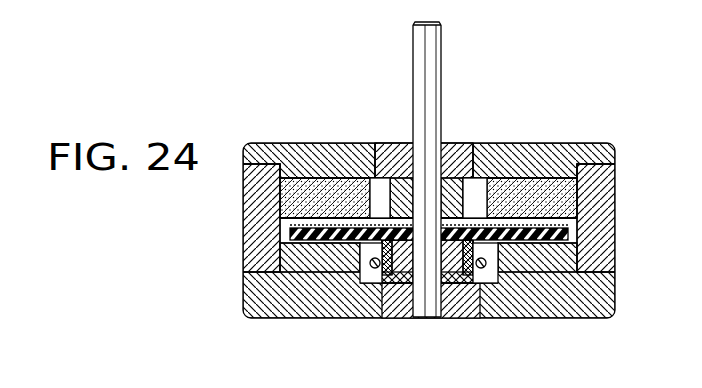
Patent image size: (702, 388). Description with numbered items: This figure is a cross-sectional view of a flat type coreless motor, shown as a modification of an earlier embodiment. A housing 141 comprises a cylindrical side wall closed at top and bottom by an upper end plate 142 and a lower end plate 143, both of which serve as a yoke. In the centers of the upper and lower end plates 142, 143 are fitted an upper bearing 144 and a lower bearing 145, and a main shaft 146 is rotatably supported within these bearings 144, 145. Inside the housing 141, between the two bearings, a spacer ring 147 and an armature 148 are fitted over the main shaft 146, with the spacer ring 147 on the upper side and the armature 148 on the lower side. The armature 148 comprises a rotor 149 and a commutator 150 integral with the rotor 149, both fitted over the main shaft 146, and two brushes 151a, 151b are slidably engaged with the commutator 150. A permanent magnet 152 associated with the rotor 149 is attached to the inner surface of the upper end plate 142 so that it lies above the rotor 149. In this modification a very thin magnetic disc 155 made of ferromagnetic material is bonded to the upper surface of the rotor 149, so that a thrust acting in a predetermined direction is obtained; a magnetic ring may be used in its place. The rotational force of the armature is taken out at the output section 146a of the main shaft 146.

The housing 141 is at (609, 203).
The upper end plate 142 is at (552, 152).
The lower end plate 143 is at (608, 312).
The upper bearing 144 is at (461, 150).
The lower bearing 145 is at (399, 317).
The main shaft 146 is at (426, 318).
The output section 146a is at (441, 60).
The spacer ring 147 is at (378, 192).
The armature 148 is at (363, 318).
The rotor 149 is at (322, 241).
The commutator 150 is at (461, 313).
The brush 151a is at (371, 266).
The brush 151b is at (485, 266).
The permanent magnet 152 is at (300, 185).
The magnetic disc 155 is at (478, 228).